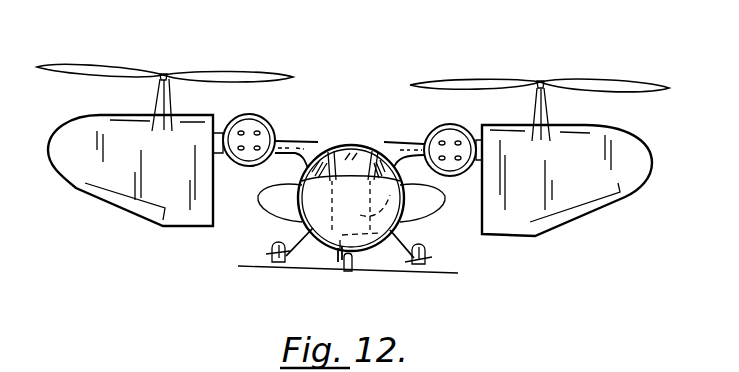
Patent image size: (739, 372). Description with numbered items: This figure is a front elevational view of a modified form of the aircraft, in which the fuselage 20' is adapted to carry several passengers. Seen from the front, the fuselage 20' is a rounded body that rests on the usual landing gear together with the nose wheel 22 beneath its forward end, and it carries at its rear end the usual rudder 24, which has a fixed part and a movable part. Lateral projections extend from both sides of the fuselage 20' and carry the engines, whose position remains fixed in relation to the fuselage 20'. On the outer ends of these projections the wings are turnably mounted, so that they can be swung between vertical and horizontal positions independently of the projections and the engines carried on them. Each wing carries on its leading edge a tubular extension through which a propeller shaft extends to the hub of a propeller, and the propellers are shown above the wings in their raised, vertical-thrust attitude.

The fuselage 20' is at (346, 226).
The nose wheel 22 is at (352, 272).
The rudder 24 is at (350, 145).